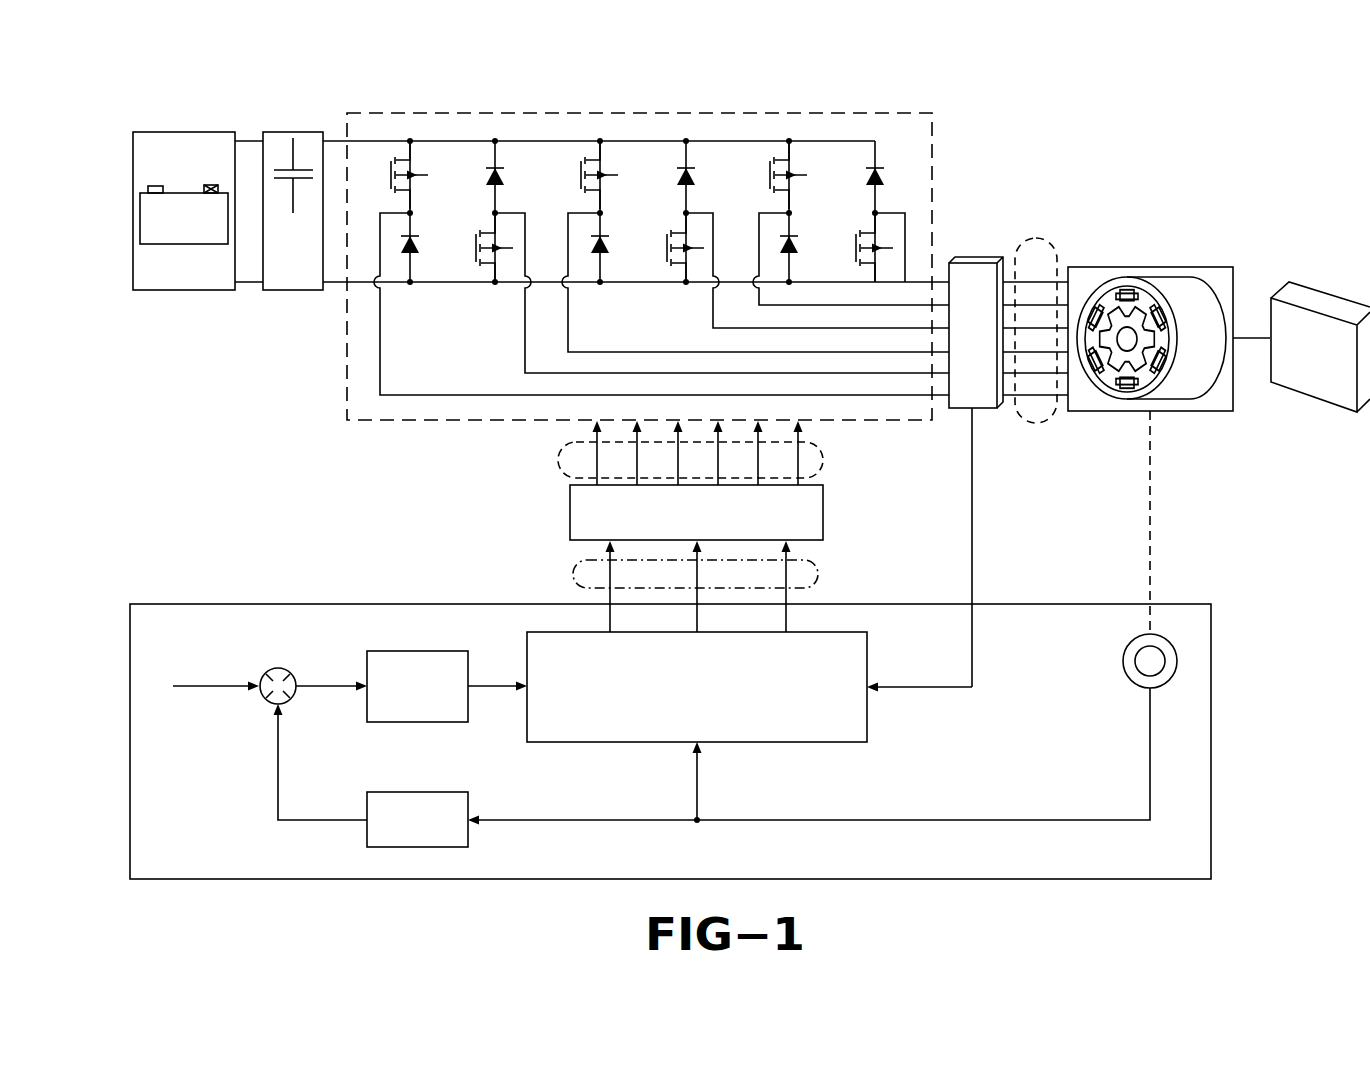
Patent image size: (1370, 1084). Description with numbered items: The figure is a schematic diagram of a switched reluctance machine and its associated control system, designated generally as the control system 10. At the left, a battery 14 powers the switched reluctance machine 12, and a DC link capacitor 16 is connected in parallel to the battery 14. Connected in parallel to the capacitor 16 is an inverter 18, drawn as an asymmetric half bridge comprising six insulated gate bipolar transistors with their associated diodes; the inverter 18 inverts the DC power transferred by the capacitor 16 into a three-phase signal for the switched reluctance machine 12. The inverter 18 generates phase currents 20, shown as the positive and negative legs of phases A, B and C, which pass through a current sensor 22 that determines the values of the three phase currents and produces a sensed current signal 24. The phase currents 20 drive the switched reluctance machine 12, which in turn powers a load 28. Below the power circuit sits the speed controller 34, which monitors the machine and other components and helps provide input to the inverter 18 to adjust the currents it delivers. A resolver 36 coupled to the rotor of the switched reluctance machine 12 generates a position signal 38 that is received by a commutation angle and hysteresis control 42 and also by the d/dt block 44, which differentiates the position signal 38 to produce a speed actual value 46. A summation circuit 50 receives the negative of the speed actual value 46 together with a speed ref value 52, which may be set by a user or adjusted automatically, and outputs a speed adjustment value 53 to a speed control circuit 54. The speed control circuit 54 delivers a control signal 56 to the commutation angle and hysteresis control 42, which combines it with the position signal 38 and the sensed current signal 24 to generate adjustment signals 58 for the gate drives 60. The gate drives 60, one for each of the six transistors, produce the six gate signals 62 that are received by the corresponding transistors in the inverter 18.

The control system 10 is at (1284, 150).
The switched reluctance machine 12 is at (1165, 287).
The battery 14 is at (180, 132).
The DC link capacitor 16 is at (295, 132).
The inverter 18 is at (675, 112).
The phase currents 20 is at (1048, 242).
The current sensor 22 is at (968, 257).
The sensed current signal 24 is at (935, 688).
The load 28 is at (1322, 305).
The speed controller 34 is at (1220, 730).
The resolver 36 is at (1150, 661).
The position signal 38 is at (1028, 820).
The commutation angle and hysteresis control 42 is at (735, 742).
The differentiator d/dt 44 is at (468, 835).
The speed actual value 46 is at (277, 805).
The summation circuit 50 is at (275, 668).
The speed ref value 52 is at (213, 688).
The speed adjustment value 53 is at (320, 684).
The speed control circuit 54 is at (425, 651).
The control signal 56 is at (480, 686).
The adjustment signals 58 is at (818, 575).
The gate drives 60 is at (823, 510).
The gate signals G1-G6 62 is at (560, 470).